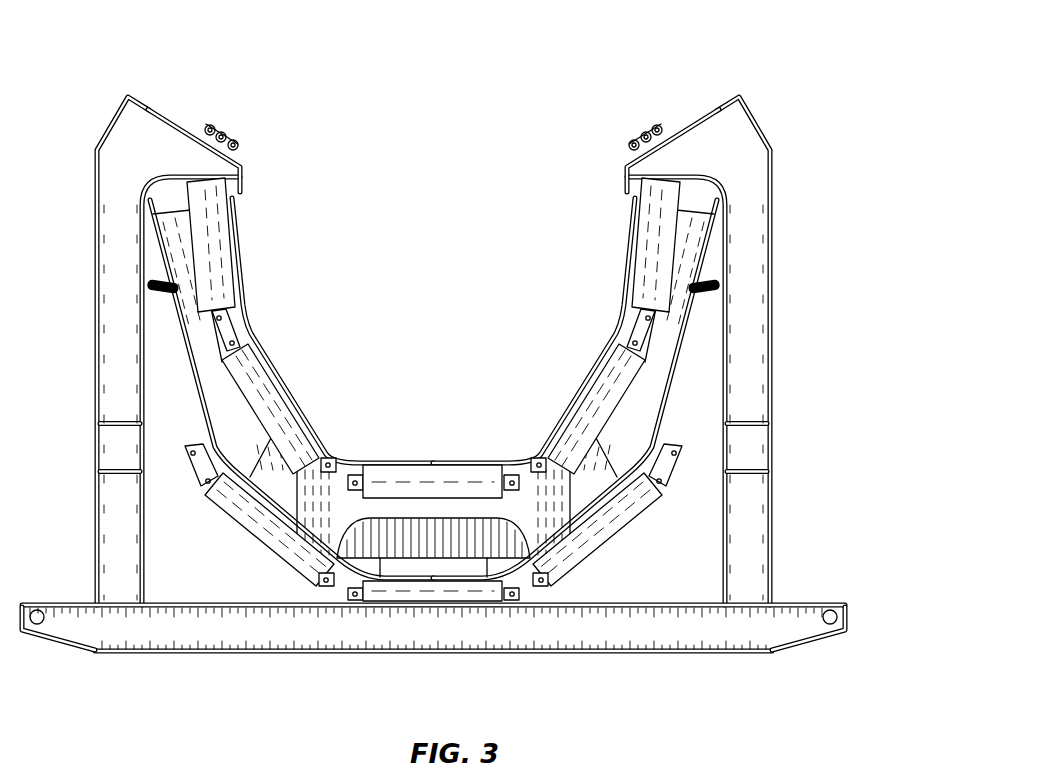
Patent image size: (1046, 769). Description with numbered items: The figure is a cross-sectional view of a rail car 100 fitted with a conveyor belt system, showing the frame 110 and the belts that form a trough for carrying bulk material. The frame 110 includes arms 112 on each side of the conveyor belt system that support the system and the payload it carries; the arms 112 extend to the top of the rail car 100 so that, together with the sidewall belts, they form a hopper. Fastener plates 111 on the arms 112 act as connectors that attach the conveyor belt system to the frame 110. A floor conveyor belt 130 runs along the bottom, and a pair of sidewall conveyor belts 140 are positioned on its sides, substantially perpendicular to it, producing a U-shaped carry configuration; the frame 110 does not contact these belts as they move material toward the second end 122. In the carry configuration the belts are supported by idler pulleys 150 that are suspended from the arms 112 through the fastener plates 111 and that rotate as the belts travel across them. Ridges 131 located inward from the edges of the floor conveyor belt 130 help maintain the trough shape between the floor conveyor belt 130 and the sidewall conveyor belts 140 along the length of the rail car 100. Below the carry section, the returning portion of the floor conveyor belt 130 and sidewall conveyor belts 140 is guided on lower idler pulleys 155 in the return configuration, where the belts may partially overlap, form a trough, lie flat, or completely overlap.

The rail car 100 is at (812, 50).
The frame 110 is at (737, 293).
The fastener plates 111 is at (200, 131).
The arms 112 is at (167, 158).
The second end 122 is at (835, 768).
The floor conveyor belt 130 is at (365, 453).
The ridges 131 is at (345, 490).
The sidewall conveyor belts 140 is at (237, 230).
The idler pulleys 150 is at (220, 263).
The lower idler pulleys 155 is at (257, 528).